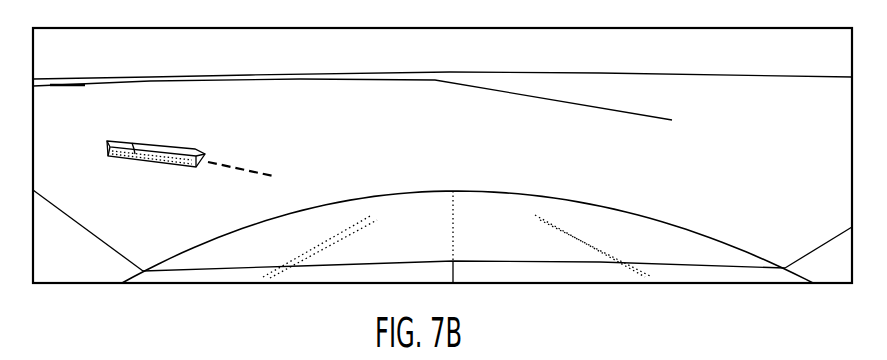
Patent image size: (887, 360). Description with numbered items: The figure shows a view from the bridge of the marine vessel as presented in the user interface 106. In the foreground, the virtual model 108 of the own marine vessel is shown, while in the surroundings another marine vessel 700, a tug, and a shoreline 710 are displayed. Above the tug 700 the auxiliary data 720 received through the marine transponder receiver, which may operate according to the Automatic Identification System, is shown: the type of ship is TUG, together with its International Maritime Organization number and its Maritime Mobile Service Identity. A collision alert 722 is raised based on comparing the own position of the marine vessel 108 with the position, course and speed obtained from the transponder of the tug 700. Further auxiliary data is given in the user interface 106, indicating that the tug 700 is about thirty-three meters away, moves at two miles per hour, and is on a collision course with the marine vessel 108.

The user interface 106 is at (447, 61).
The virtual model 108 is at (472, 190).
The another marine vessel 700 is at (152, 165).
The shoreline 710 is at (81, 225).
The auxiliary data 720 is at (196, 62).
The collision alert 722 is at (405, 131).